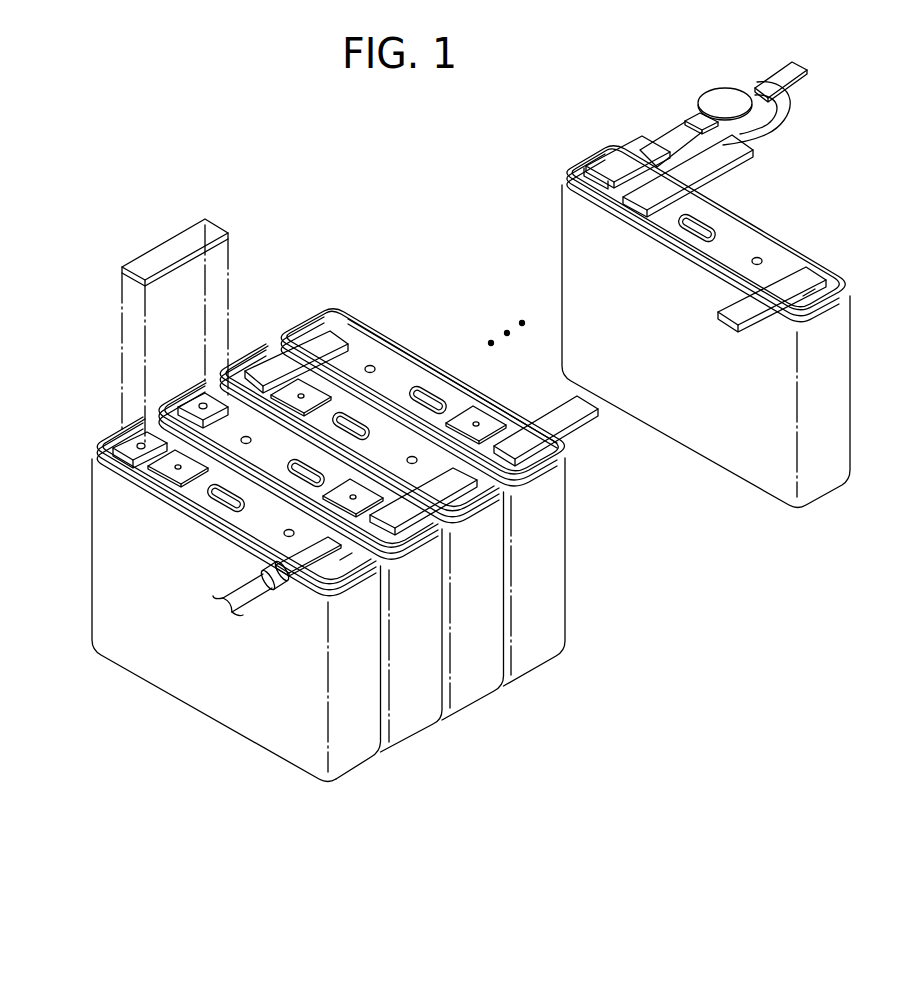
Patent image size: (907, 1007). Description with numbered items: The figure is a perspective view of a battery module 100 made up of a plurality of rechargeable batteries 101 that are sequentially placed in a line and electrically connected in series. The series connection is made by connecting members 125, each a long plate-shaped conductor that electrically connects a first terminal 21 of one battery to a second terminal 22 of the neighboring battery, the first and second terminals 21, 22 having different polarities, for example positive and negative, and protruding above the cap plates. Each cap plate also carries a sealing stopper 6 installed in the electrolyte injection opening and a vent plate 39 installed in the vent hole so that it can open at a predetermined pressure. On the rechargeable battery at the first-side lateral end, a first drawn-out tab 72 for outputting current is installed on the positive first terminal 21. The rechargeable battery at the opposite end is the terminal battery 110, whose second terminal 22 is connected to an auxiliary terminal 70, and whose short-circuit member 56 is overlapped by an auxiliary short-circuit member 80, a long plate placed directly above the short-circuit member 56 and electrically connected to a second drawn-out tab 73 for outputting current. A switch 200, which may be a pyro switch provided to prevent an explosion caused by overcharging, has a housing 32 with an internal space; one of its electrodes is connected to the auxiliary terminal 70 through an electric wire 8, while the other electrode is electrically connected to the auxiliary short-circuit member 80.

The battery module 100 is at (351, 162).
The rechargeable battery 101 is at (476, 703).
The terminal battery 110 is at (772, 483).
The connecting member 125 is at (176, 248).
The first terminal 21 is at (205, 403).
The second terminal 22 is at (140, 444).
The short-circuit member 56 is at (178, 472).
The first drawn-out tab 72 is at (317, 580).
The vent plate 39 is at (710, 228).
The sealing stopper 6 is at (762, 259).
The switch 200 is at (740, 129).
The auxiliary terminal 70 is at (636, 152).
The auxiliary short-circuit member 80 is at (727, 155).
The electric wire 8 is at (672, 132).
The housing 32 is at (712, 97).
The second drawn-out tab 73 is at (785, 72).